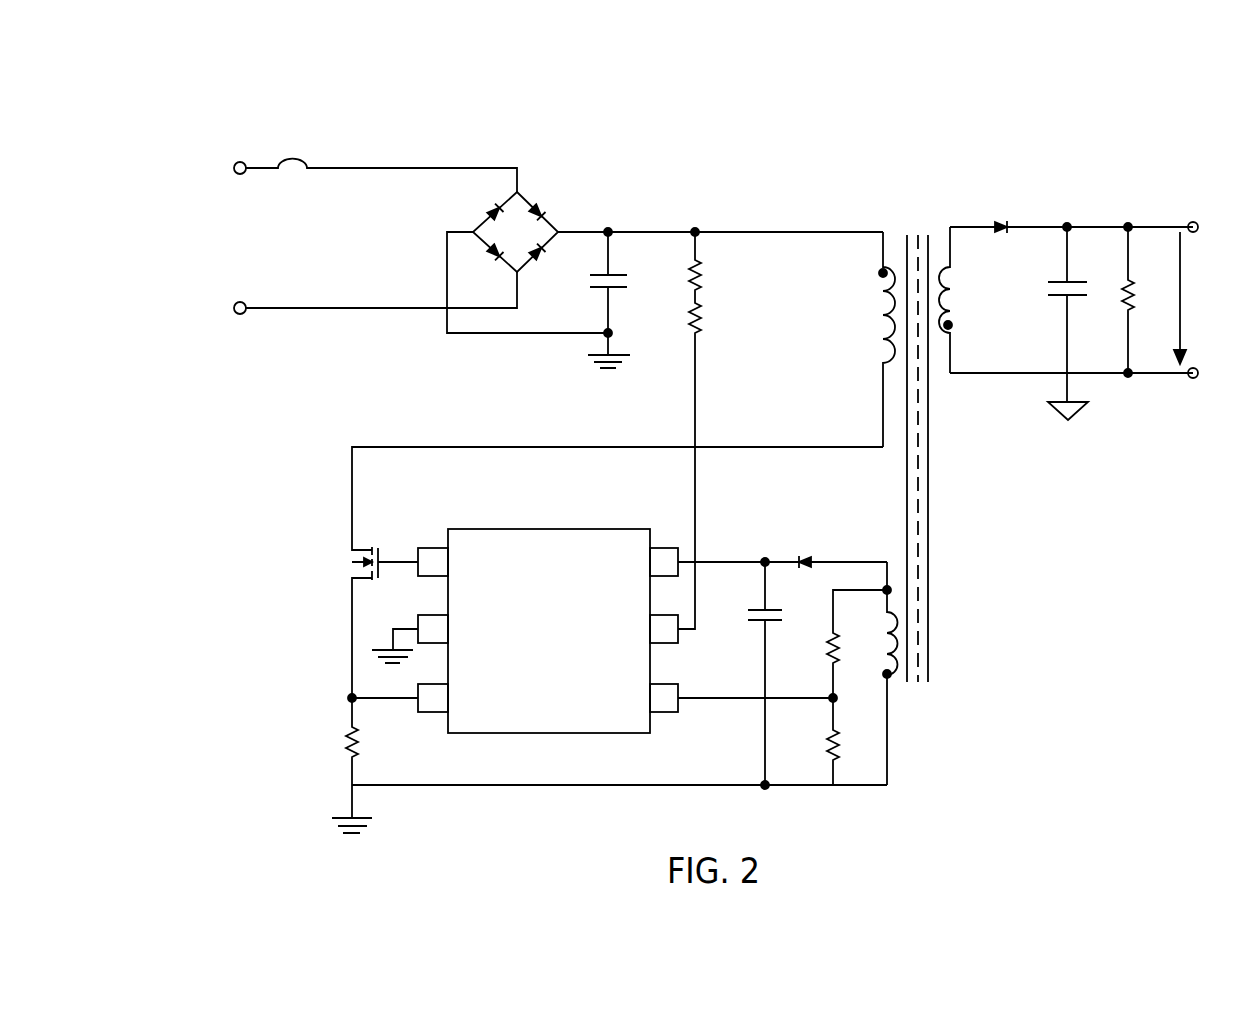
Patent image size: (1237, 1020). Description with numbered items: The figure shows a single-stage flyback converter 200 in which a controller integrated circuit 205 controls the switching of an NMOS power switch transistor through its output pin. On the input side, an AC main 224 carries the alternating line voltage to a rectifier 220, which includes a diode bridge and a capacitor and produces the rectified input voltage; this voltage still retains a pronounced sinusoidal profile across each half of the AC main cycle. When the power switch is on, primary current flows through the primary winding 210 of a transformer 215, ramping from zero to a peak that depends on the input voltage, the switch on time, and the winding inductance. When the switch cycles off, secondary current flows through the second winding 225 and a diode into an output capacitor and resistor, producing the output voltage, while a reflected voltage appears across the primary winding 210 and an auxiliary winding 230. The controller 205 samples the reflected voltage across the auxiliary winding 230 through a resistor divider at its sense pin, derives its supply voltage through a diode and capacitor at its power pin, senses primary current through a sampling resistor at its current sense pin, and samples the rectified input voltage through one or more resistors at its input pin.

The single-stage flyback converter 200 is at (797, 105).
The controller integrated circuit 205 is at (550, 529).
The primary winding 210 is at (883, 317).
The transformer 215 is at (918, 462).
The rectifier 220 is at (593, 172).
The AC main 224 is at (218, 165).
The second winding 225 is at (948, 275).
The auxiliary winding 230 is at (887, 674).